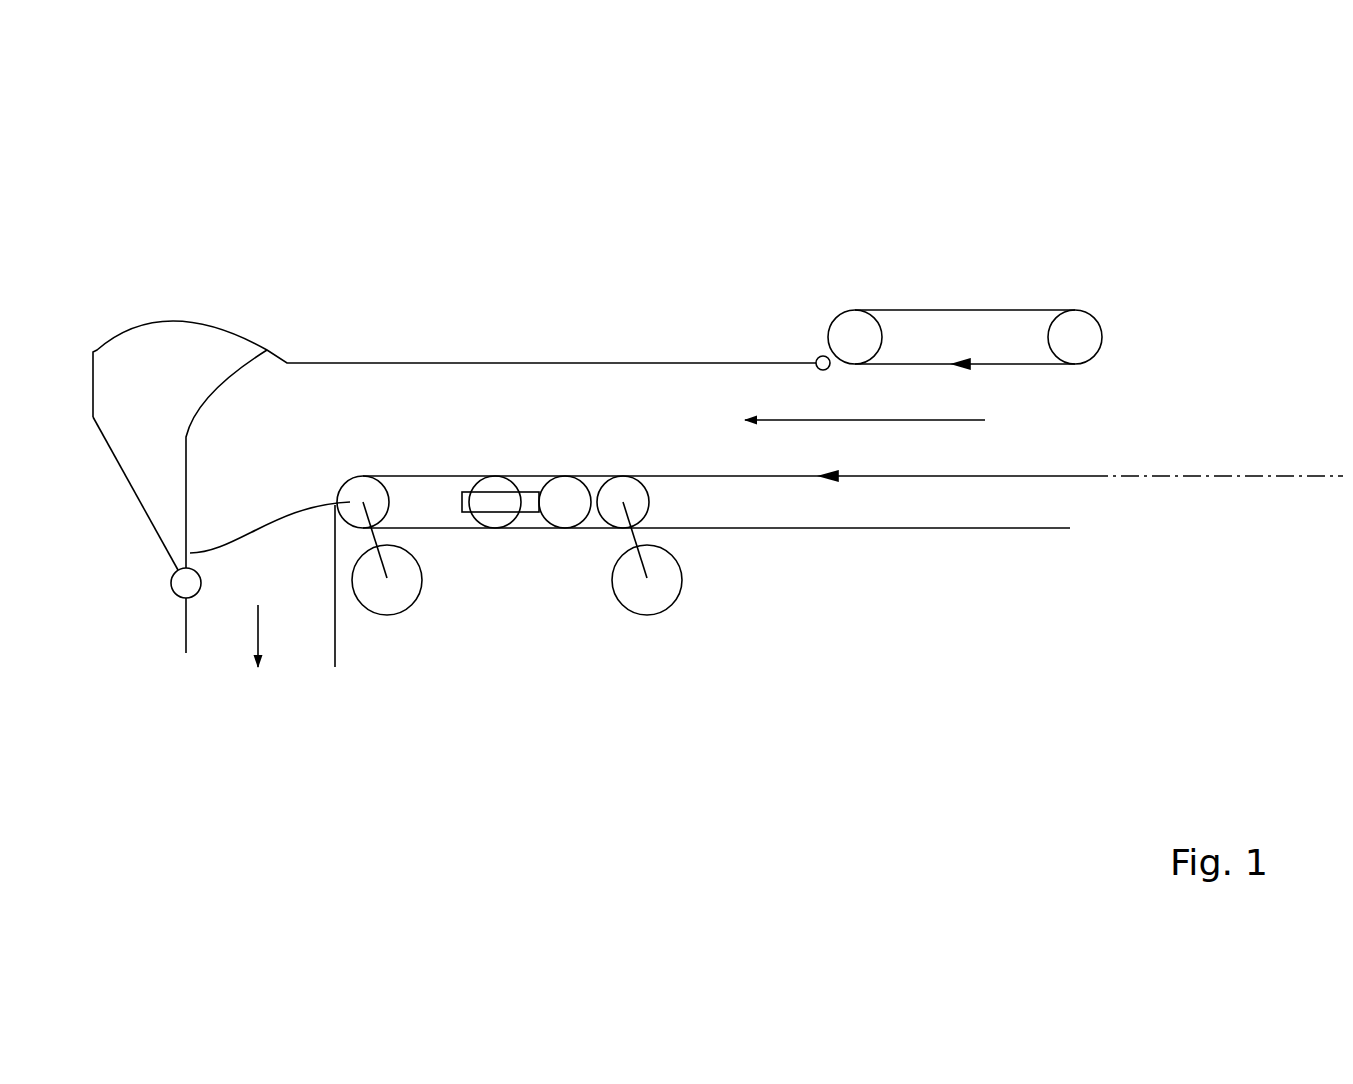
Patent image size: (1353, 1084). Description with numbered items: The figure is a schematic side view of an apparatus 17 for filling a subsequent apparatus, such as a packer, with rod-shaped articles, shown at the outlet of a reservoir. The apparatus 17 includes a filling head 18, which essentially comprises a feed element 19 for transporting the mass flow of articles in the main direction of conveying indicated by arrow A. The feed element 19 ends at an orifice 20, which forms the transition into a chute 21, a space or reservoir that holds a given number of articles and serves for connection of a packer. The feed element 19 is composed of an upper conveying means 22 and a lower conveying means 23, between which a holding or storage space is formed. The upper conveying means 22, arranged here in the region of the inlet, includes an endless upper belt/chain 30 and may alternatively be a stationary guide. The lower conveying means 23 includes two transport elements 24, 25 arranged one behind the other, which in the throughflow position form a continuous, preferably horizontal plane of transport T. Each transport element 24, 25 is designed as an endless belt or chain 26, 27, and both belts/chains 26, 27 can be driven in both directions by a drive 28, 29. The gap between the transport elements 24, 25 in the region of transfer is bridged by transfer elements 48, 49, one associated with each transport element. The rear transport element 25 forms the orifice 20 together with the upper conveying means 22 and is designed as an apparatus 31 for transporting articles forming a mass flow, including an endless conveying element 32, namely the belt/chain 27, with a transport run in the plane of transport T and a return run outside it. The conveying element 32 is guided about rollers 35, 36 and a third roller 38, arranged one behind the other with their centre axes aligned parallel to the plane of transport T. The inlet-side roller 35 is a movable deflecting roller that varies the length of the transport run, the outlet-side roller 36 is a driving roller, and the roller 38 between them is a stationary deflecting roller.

The apparatus 17 is at (1167, 228).
The filling head 18 is at (235, 298).
The feed element 19 is at (1138, 422).
The orifice 20 is at (275, 432).
The chute 21 is at (257, 462).
The upper conveying means 22 is at (828, 283).
The lower conveying means 23 is at (730, 550).
The transport element 24 is at (800, 517).
The transport element 25 is at (425, 512).
The belt/chain 26 is at (872, 530).
The belt/chain 27 is at (463, 528).
The drive 28 is at (635, 595).
The drive 29 is at (380, 597).
The upper belt/chain 30 is at (958, 308).
The apparatus for transporting articles 31 is at (467, 460).
The conveying element 32 is at (403, 472).
The roller 35 is at (563, 512).
The roller 36 is at (190, 553).
The roller 38 is at (503, 470).
The transfer element 48 is at (634, 388).
The transfer element 49 is at (595, 477).
The arrow A is at (865, 401).
The plane of transport T is at (1267, 473).